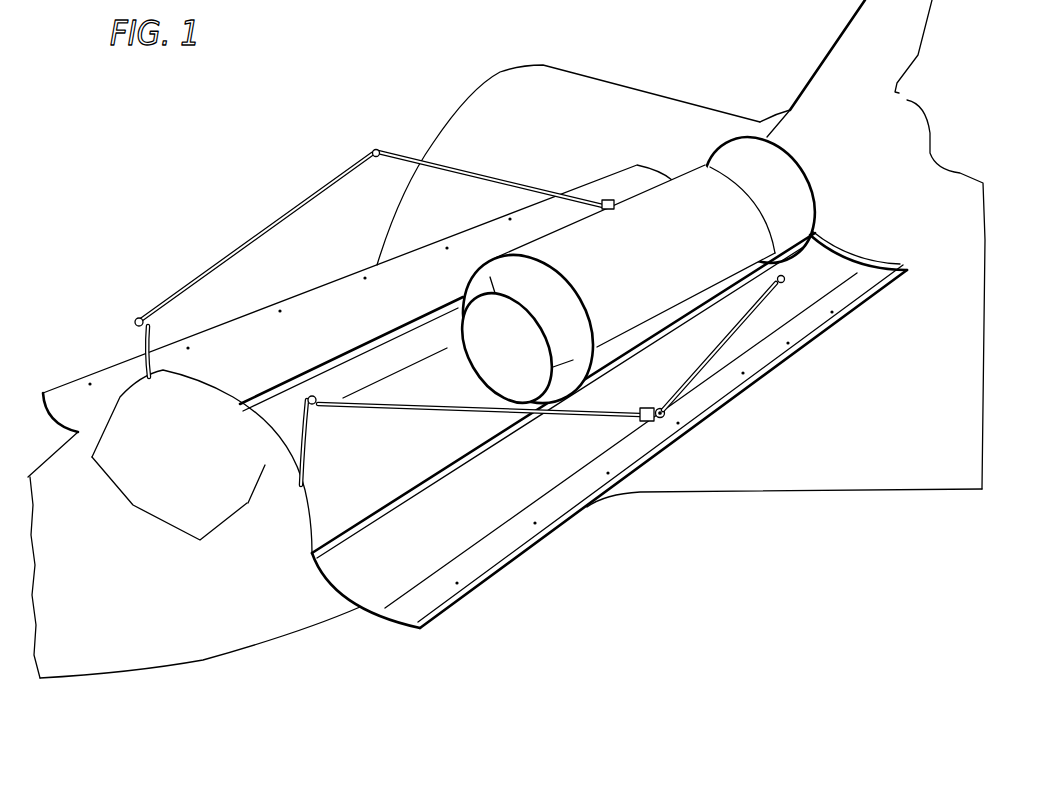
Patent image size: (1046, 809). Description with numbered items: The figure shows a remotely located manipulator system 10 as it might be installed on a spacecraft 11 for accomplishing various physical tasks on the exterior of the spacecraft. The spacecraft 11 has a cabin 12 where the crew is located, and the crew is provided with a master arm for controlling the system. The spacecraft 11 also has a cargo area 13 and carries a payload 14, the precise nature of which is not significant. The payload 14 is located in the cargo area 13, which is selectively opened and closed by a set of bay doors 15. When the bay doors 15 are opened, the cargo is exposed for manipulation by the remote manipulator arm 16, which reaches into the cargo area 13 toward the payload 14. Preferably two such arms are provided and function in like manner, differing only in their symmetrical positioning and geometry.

The remotely located manipulator system 10 is at (373, 114).
The spacecraft 11 is at (131, 680).
The cabin 12 is at (131, 586).
The cargo area 13 is at (449, 391).
The payload 14 is at (659, 277).
The bay doors 15 is at (840, 320).
The remote manipulator arm 16 is at (398, 417).